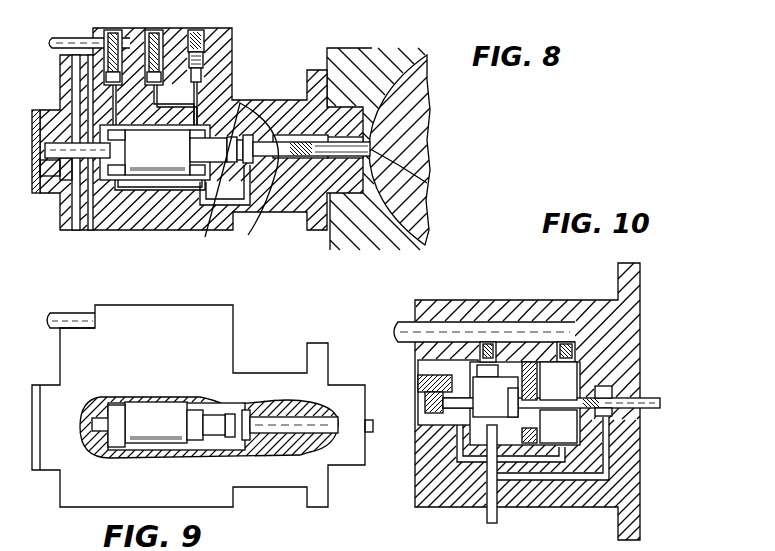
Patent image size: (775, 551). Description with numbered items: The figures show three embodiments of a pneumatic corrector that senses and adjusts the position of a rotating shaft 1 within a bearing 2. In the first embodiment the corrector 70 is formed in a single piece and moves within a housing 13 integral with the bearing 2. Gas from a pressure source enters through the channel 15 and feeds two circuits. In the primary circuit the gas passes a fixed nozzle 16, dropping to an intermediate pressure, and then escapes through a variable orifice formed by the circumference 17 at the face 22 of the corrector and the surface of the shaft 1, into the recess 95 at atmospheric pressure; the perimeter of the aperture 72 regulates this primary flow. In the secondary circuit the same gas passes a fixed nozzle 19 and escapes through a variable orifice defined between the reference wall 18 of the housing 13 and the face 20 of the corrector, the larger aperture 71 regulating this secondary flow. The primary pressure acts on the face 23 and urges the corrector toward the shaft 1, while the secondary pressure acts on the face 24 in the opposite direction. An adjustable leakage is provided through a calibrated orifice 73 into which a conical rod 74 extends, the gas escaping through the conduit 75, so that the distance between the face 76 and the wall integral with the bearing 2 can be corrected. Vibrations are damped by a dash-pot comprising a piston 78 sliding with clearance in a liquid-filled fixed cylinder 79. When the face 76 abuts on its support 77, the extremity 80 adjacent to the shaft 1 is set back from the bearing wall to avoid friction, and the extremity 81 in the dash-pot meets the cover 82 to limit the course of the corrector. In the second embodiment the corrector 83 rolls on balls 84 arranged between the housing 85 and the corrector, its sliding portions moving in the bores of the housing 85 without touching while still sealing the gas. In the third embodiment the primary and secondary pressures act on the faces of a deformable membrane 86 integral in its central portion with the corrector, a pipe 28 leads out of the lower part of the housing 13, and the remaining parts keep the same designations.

In FIG. 8, the shaft 1 is at (417, 129).
In FIG. 8, the bearing 2 is at (371, 236).
In FIG. 8, the housing 13 is at (143, 225).
In FIG. 10, the housing 13 is at (582, 500).
In FIG. 8, the channel 15 is at (57, 44).
In FIG. 10, the channel 15 is at (399, 324).
In FIG. 8, the nozzle 16 is at (114, 32).
In FIG. 10, the nozzle 16 is at (488, 358).
In FIG. 9, the circumference 17 is at (373, 421).
In FIG. 10, the circumference 17 is at (661, 409).
In FIG. 10, the reference wall 18 is at (445, 379).
In FIG. 8, the nozzle 19 is at (156, 32).
In FIG. 10, the nozzle 19 is at (565, 345).
In FIG. 10, the face of the corrector 20 is at (446, 420).
In FIG. 9, the face of the corrector 22 is at (372, 432).
In FIG. 10, the face of the corrector 22 is at (657, 395).
In FIG. 9, the face of the corrector 23 is at (118, 402).
In FIG. 10, the face of the corrector 23 is at (489, 431).
In FIG. 9, the face of the corrector 24 is at (198, 402).
In FIG. 10, the face of the corrector 24 is at (538, 424).
In FIG. 10, the drain pipe 28 is at (492, 521).
In FIG. 8, the corrector 70 is at (156, 152).
In FIG. 8, the aperture 71 is at (238, 135).
In FIG. 8, the aperture 72 is at (426, 144).
In FIG. 8, the calibrated orifice 73 is at (206, 83).
In FIG. 8, the conical rod 74 is at (231, 47).
In FIG. 8, the conduit 75 is at (233, 69).
In FIG. 8, the face of the corrector 76 is at (240, 181).
In FIG. 8, the support 77 is at (244, 206).
In FIG. 8, the piston 78 is at (63, 166).
In FIG. 8, the fixed cylinder 79 is at (37, 121).
In FIG. 8, the extremity of the corrector 80 is at (427, 183).
In FIG. 8, the extremity of the corrector 81 is at (44, 150).
In FIG. 8, the cover 82 is at (42, 163).
In FIG. 9, the corrector 83 is at (156, 422).
In FIG. 9, the balls 84 is at (86, 445).
In FIG. 9, the housing 85 is at (198, 406).
In FIG. 10, the deformable membrane 86 is at (529, 362).
In FIG. 10, the recess 95 is at (550, 400).